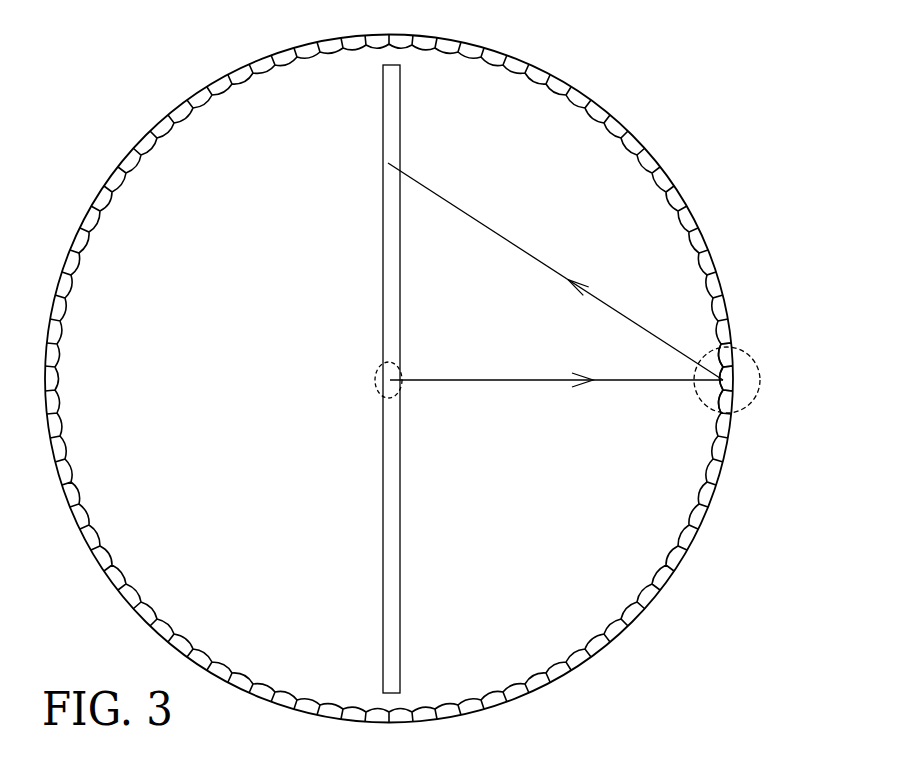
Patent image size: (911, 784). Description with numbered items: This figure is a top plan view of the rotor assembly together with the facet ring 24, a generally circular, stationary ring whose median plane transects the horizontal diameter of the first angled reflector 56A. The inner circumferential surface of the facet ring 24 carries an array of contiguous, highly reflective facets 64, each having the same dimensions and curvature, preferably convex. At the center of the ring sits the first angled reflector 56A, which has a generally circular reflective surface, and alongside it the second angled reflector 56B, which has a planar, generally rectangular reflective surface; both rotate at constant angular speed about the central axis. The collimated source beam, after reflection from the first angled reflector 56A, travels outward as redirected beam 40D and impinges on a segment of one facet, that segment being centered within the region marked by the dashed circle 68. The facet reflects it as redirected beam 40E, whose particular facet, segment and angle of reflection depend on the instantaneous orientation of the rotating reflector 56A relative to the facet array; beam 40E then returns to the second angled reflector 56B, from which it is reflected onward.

The facet ring 24 is at (563, 673).
The facets 64 is at (732, 363).
The dashed circle 68 is at (703, 405).
The first angled reflector 56A is at (375, 377).
The second angled reflector 56B is at (387, 544).
The redirected beam 40D is at (550, 380).
The redirected beam 40E is at (490, 228).